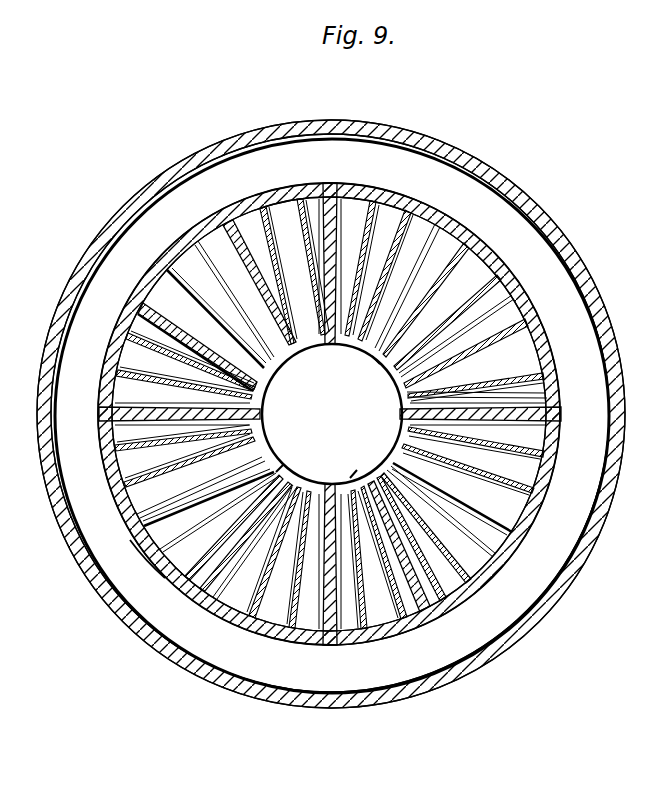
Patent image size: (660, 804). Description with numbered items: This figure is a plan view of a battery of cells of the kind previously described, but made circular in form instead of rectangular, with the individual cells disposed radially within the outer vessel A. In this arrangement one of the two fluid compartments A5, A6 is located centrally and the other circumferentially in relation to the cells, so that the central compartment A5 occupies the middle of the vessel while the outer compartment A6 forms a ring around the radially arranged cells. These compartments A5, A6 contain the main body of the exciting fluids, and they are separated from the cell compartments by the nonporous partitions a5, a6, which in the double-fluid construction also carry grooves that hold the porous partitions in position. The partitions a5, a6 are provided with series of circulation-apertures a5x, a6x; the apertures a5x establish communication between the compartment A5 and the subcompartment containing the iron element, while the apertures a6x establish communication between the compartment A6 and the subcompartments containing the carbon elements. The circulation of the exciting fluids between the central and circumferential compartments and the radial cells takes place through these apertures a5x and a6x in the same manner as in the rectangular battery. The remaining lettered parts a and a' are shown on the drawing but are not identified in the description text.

The outer vessel A is at (505, 262).
The outer compartment A6 is at (332, 416).
The outer compartment A5 is at (332, 414).
The armature core segment a is at (333, 416).
The armature core plate a' is at (331, 414).
The nonporous partition a5 is at (366, 417).
The circulation-apertures a5x is at (296, 457).
The nonporous partition a6 is at (118, 332).
The circulation-apertures a6x is at (150, 556).